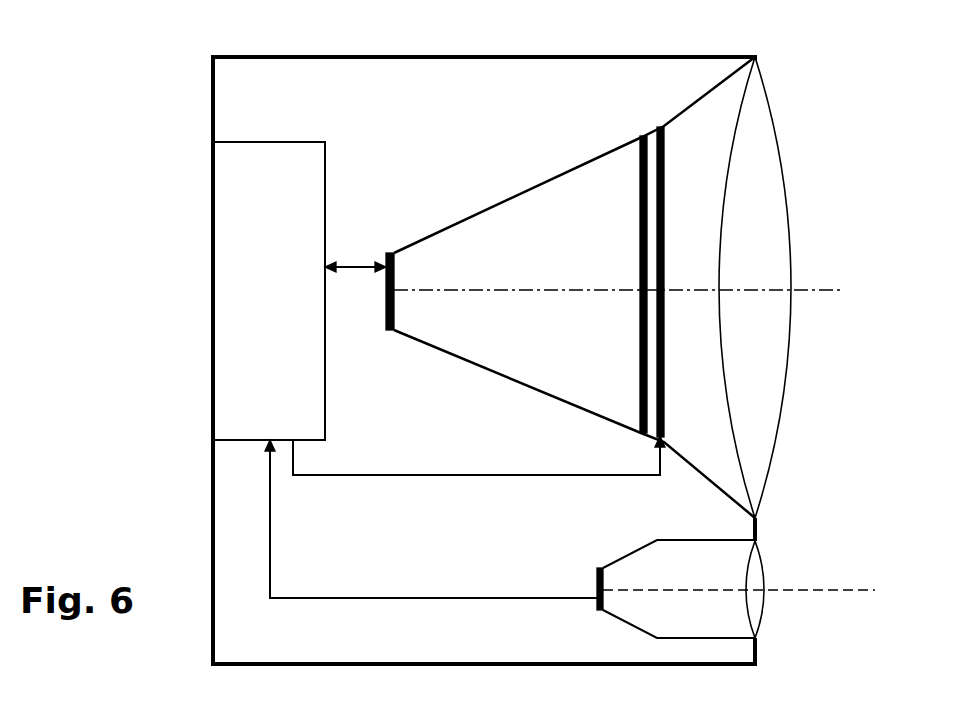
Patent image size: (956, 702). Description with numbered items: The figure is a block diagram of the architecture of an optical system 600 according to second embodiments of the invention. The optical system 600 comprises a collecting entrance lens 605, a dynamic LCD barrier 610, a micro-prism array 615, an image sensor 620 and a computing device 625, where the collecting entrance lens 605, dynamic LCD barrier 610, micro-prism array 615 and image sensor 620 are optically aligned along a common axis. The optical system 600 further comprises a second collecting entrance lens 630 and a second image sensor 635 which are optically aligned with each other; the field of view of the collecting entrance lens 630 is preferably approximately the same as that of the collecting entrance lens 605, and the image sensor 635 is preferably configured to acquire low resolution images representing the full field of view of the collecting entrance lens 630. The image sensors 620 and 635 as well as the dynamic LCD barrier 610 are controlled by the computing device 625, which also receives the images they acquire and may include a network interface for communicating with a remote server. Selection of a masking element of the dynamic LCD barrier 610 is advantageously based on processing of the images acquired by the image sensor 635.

The optical system 600 is at (140, 87).
The collecting entrance lens 605 is at (763, 150).
The dynamic LCD barrier 610 is at (667, 142).
The micro-prism array 615 is at (637, 163).
The image sensor 620 is at (386, 327).
The computing device 625 is at (228, 395).
The collecting entrance lens 630 is at (762, 566).
The image sensor 635 is at (594, 580).